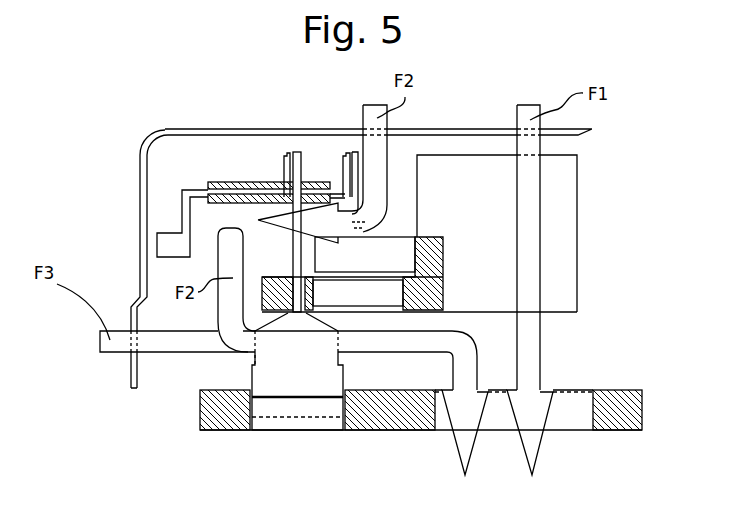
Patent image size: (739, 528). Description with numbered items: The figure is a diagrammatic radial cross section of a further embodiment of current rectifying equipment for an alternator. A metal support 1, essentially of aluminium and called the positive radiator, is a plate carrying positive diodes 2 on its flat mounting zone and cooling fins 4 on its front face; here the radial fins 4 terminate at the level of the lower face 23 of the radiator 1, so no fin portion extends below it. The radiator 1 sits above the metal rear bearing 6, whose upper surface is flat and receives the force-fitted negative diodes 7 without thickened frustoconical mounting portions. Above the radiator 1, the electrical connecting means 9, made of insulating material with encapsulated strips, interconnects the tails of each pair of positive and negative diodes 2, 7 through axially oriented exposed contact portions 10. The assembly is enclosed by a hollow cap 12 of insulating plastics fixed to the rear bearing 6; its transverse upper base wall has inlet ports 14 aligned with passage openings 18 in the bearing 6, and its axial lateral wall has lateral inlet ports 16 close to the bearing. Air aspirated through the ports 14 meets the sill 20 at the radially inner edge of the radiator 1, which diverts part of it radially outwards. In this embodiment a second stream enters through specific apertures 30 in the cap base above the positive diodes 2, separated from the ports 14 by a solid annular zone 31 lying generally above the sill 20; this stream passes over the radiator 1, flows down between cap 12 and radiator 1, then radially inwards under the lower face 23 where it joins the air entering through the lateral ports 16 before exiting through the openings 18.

The support 1 is at (445, 286).
The positive diodes 2 is at (383, 253).
The cooling fins 4 is at (563, 250).
The rear bearing 6 is at (425, 430).
The negative diodes 7 is at (238, 353).
The electrical connecting means 9 is at (218, 181).
The exposed contact portions 10 is at (322, 195).
The hollow cap 12 is at (140, 208).
The inlet ports 14 is at (470, 129).
The lateral inlet ports 16 is at (128, 364).
The passage openings 18 is at (507, 424).
The sill 20 is at (435, 255).
The lower face of the radiator 23 is at (440, 314).
The apertures 30 is at (350, 132).
The solid annular zone 31 is at (427, 129).